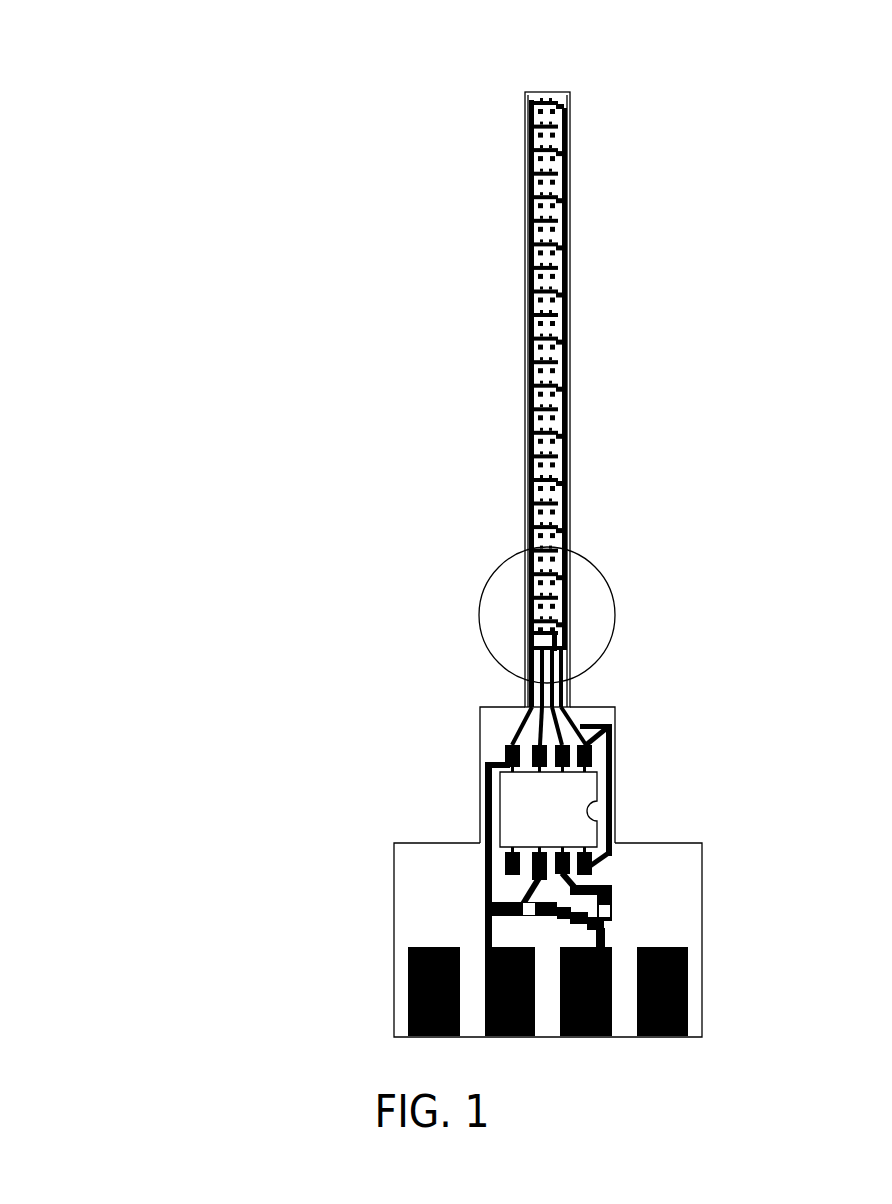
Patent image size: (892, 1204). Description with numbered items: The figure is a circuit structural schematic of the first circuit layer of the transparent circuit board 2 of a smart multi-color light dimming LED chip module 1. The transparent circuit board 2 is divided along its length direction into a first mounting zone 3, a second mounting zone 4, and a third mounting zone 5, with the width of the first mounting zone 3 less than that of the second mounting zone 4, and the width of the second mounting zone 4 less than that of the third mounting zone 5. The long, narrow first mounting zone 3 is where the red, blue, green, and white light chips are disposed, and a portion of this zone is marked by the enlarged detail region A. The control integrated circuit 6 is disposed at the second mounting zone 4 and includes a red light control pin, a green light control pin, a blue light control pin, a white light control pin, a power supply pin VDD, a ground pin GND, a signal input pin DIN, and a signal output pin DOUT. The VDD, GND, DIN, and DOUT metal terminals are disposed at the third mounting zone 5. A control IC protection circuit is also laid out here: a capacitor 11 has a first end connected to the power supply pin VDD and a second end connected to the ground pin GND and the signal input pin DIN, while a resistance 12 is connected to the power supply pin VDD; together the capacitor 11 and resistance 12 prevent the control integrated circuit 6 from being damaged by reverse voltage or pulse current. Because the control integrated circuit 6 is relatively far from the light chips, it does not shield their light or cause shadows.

The smart multi-color light dimming LED chip module 1 is at (654, 68).
The transparent circuit board 2 is at (252, 787).
The first mounting zone 3 is at (525, 320).
The second mounting zone 4 is at (500, 723).
The third mounting zone 5 is at (417, 883).
The control integrated circuit 6 is at (578, 802).
The capacitor 11 is at (537, 902).
The resistance 12 is at (608, 910).
The enlarged detail region A is at (578, 610).